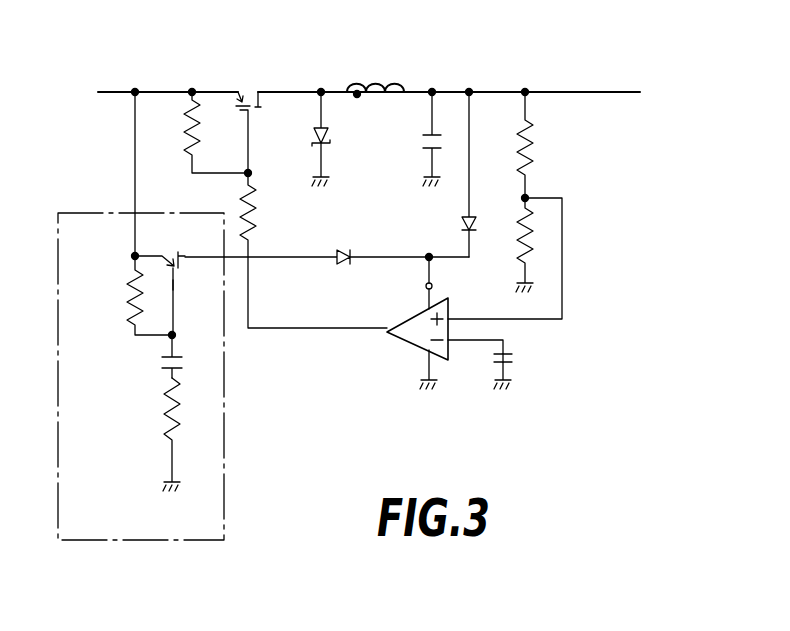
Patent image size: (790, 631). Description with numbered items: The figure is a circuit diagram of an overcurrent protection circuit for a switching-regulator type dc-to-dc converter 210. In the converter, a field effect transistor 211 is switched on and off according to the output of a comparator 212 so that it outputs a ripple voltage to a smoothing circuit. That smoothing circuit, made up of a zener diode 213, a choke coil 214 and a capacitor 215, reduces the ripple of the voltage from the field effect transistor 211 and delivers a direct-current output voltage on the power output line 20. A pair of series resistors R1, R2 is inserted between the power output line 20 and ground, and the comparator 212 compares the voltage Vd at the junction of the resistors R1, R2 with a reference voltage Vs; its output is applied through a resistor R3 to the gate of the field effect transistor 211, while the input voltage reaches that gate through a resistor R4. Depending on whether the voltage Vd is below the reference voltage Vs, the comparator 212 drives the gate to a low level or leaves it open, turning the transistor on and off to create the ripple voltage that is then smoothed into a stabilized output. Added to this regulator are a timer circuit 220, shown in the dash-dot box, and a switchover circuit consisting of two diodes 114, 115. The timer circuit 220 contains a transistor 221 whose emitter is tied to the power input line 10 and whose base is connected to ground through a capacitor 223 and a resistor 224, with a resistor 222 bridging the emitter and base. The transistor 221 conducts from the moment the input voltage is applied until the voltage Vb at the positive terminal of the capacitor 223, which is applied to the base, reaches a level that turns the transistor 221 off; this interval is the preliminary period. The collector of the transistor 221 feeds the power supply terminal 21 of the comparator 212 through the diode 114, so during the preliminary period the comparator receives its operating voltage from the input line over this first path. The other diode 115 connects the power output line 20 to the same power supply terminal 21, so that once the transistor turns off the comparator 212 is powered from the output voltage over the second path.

The power input line 10 is at (112, 88).
The power output line 20 is at (613, 92).
The power supply terminal 21 is at (433, 285).
The diode 114 is at (337, 252).
The diode 115 is at (462, 221).
The dc-to-dc converter 210 is at (361, 74).
The field effect transistor 211 is at (268, 88).
The comparator 212 is at (410, 320).
The zener diode 213 is at (317, 137).
The choke coil 214 is at (381, 84).
The capacitor 215 is at (425, 146).
The timer circuit 220 is at (162, 542).
The transistor 221 is at (195, 248).
The resistor 222 is at (131, 296).
The capacitor 223 is at (160, 380).
The resistor 224 is at (156, 436).
The resistor R1 is at (544, 147).
The resistor R2 is at (508, 245).
The resistor R3 is at (313, 250).
The resistor R4 is at (201, 134).
The junction voltage Vd is at (505, 251).
The capacitor terminal voltage Vb is at (190, 292).
The reference voltage Vs is at (532, 362).